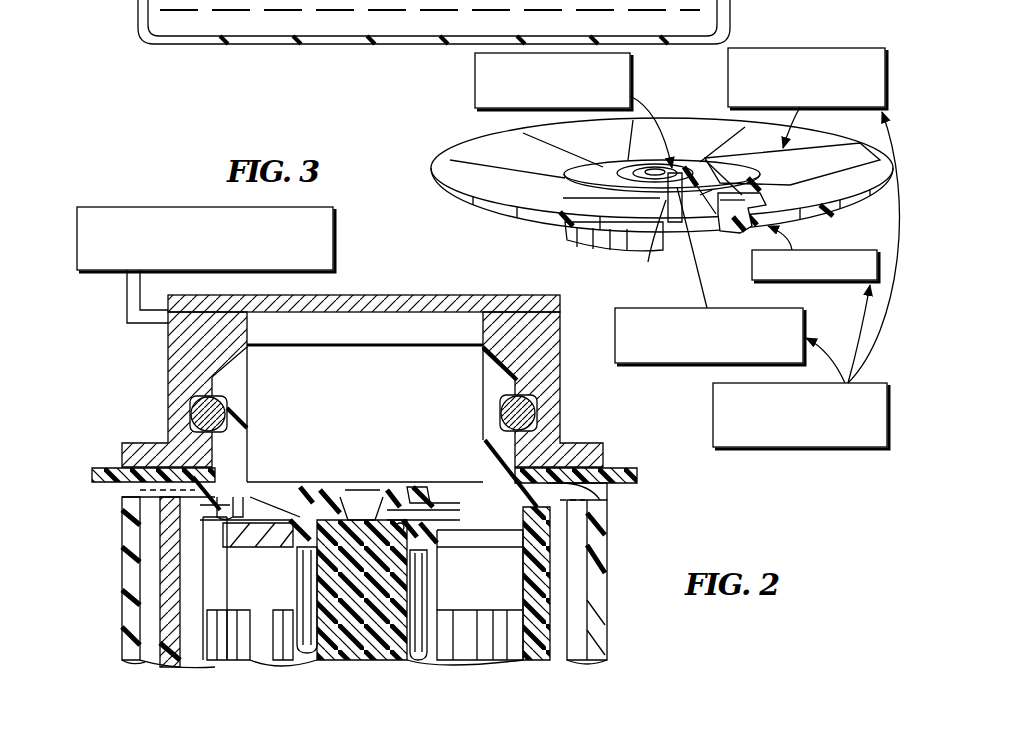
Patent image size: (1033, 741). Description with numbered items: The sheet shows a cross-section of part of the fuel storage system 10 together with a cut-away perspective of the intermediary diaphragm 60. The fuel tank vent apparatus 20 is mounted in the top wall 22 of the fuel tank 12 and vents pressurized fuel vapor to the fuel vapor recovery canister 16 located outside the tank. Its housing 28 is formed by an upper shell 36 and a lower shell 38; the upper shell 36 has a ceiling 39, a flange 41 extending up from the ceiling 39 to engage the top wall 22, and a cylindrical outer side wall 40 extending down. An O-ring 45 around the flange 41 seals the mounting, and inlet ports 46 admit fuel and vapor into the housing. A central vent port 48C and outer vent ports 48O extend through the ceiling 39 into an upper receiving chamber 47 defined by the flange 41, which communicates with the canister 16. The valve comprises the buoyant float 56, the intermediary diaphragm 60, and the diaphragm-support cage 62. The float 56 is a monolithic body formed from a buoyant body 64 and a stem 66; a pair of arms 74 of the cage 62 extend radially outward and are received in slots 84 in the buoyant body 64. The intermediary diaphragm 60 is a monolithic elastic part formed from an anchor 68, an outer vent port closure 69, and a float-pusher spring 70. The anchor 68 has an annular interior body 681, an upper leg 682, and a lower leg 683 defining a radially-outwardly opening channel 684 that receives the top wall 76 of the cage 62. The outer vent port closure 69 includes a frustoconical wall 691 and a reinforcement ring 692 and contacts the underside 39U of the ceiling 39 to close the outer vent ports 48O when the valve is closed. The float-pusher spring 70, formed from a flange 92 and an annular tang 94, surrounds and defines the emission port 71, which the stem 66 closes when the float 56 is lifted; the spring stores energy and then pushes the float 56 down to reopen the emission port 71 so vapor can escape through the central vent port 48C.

In FIG. 2, the fuel storage system 10 is at (95, 358).
In FIG. 2, the fuel tank 12 is at (628, 485).
In FIG. 2, the fuel vapor recovery canister 16 is at (140, 207).
In FIG. 2, the fuel tank vent apparatus 20 is at (407, 283).
In FIG. 2, the top wall 22 is at (627, 465).
In FIG. 2, the housing 28 is at (68, 650).
In FIG. 2, the upper shell 36 is at (118, 606).
In FIG. 2, the lower shell 38 is at (142, 662).
In FIG. 2, the ceiling 39 is at (135, 468).
In FIG. 2, the underside of ceiling 39U is at (247, 414).
In FIG. 2, the cylindrical outer side wall 40 is at (605, 548).
In FIG. 2, the flange 41 is at (528, 368).
In FIG. 2, the O-ring 45 is at (545, 395).
In FIG. 2, the inlet ports 46 is at (595, 500).
In FIG. 2, the upper receiving chamber 47 is at (355, 372).
In FIG. 2, the outer vent ports 48O is at (270, 485).
In FIG. 2, the central vent port 48C is at (312, 487).
In FIG. 2, the buoyant float 56 is at (460, 630).
In FIG. 3, the intermediary diaphragm 60 is at (867, 383).
In FIG. 2, the intermediary diaphragm 60 is at (350, 478).
In FIG. 2, the diaphragm-support cage 62 is at (505, 548).
In FIG. 2, the buoyant body 64 is at (268, 643).
In FIG. 2, the stem 66 is at (230, 540).
In FIG. 3, the anchor 68 is at (838, 250).
In FIG. 2, the anchor 68 is at (408, 487).
In FIG. 3, the outer vent port closure 69 is at (818, 48).
In FIG. 2, the outer vent port closure 69 is at (445, 497).
In FIG. 3, the frustoconical wall 691 is at (478, 140).
In FIG. 3, the reinforcement ring 692 is at (512, 215).
In FIG. 3, the float-pusher spring 70 is at (663, 307).
In FIG. 2, the float-pusher spring 70 is at (388, 490).
In FIG. 3, the emission port 71 is at (630, 68).
In FIG. 2, the emission port 71 is at (362, 497).
In FIG. 2, the arm 74 is at (276, 572).
In FIG. 2, the top wall 76 is at (296, 497).
In FIG. 2, the slot 84 is at (280, 612).
In FIG. 3, the flange 92 is at (698, 160).
In FIG. 3, the annular tang 94 is at (678, 197).
In FIG. 3, the annular interior body 681 is at (714, 212).
In FIG. 3, the upper leg 682 is at (737, 172).
In FIG. 3, the lower leg 683 is at (747, 233).
In FIG. 3, the radially-outwardly opening channel 684 is at (762, 205).